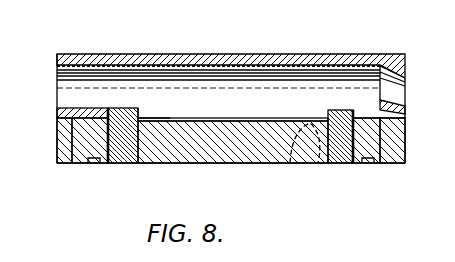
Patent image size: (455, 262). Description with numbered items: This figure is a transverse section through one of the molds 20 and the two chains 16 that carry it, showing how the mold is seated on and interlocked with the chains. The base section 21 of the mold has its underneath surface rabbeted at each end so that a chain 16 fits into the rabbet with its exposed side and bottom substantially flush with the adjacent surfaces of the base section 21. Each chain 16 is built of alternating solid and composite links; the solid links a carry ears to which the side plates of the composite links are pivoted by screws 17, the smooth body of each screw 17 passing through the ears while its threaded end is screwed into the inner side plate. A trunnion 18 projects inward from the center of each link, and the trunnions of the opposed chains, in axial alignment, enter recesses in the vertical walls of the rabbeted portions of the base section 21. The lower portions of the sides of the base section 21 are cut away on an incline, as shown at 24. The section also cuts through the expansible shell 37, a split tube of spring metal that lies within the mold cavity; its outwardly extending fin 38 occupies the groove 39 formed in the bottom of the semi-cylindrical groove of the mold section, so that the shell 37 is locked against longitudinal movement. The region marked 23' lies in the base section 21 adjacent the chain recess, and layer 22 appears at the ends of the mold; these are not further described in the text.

The expansible shell 37 is at (388, 54).
The mold 20 is at (211, 108).
The sealing layer 22 is at (57, 110).
The screw 17 is at (63, 138).
The endless chain 16 is at (92, 160).
The solid link a is at (239, 175).
The trunnion 18 is at (112, 165).
The base section 21 is at (149, 167).
The inclined cut-away 24 is at (276, 174).
The base block portion 23' is at (305, 154).
The fin 38 is at (162, 118).
The groove 39 is at (208, 121).